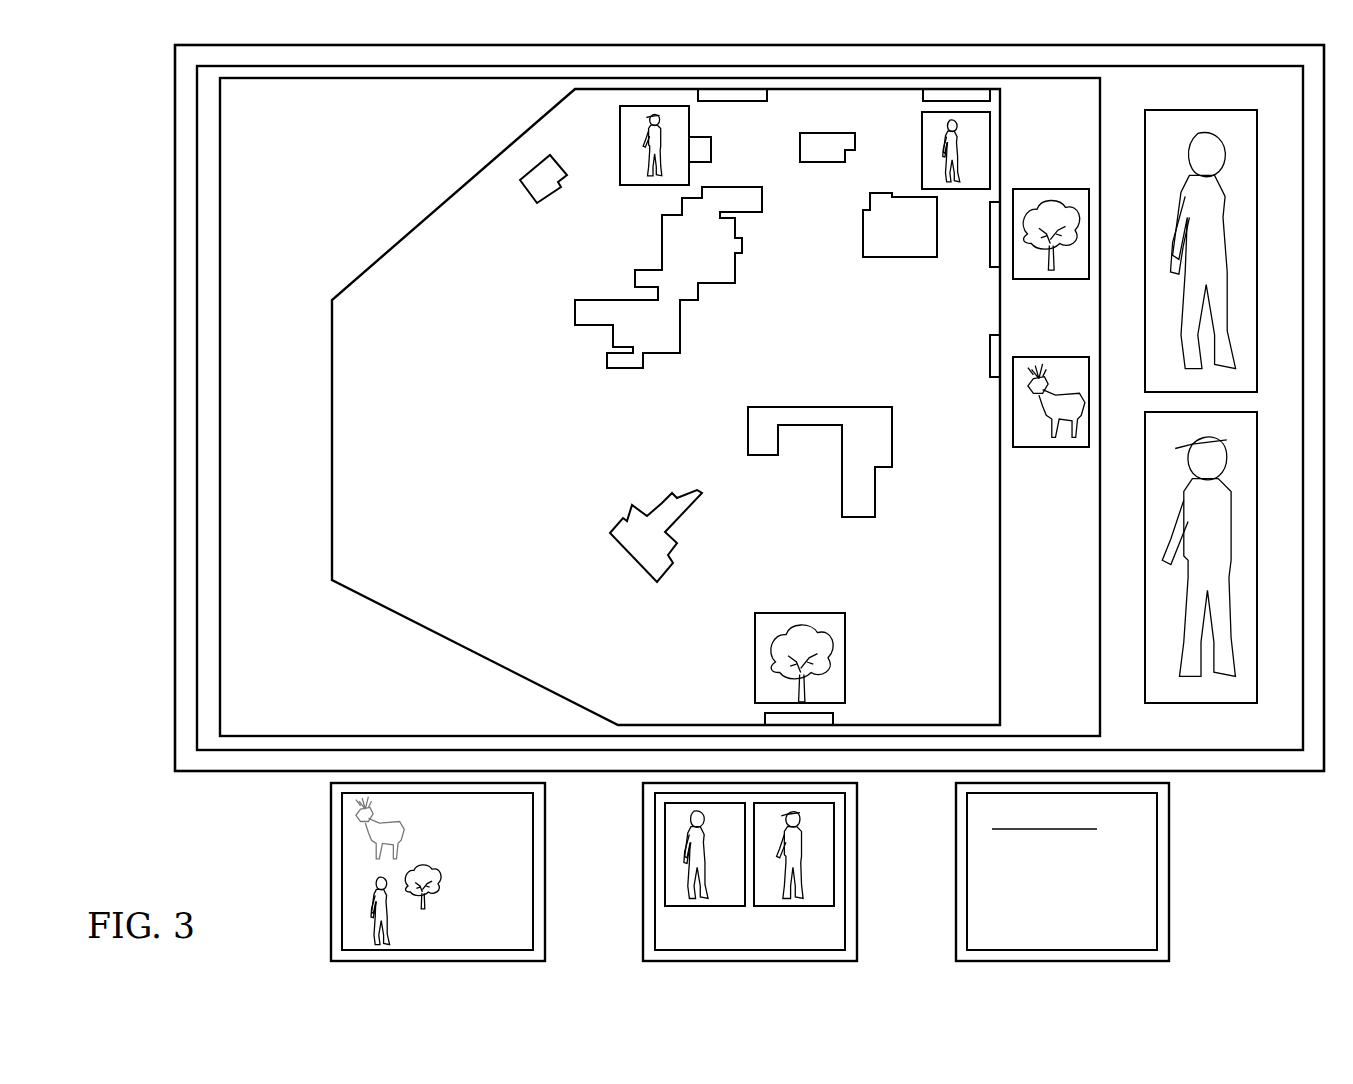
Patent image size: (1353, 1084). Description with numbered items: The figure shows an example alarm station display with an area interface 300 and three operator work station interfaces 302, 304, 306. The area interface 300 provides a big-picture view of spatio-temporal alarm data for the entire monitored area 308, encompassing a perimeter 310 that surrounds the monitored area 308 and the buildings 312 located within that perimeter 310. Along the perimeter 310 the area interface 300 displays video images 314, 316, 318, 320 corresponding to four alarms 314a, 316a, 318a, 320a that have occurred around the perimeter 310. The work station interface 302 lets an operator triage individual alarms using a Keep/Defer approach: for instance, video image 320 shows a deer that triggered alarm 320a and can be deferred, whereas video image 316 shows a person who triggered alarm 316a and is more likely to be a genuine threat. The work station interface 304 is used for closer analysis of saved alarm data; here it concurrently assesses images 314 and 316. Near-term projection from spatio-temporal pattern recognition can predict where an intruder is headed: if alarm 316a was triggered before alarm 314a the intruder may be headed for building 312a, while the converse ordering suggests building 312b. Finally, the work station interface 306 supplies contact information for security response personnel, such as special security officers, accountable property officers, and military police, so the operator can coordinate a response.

The area interface 300 is at (160, 78).
The work station interface 302 is at (331, 870).
The work station interface 304 is at (857, 870).
The work station interface 306 is at (1169, 870).
The monitored area 308 is at (495, 552).
The perimeter 310 is at (454, 193).
The buildings 312 is at (575, 312).
The building 312a is at (527, 197).
The building 312b is at (862, 235).
The video image 314 is at (642, 186).
The alarm 314a is at (732, 101).
The video image 316 is at (922, 160).
The alarm 316a is at (922, 93).
The video image 318 is at (1050, 189).
The alarm 318a is at (985, 255).
The video image 320 is at (1045, 447).
The alarm 320a is at (985, 368).